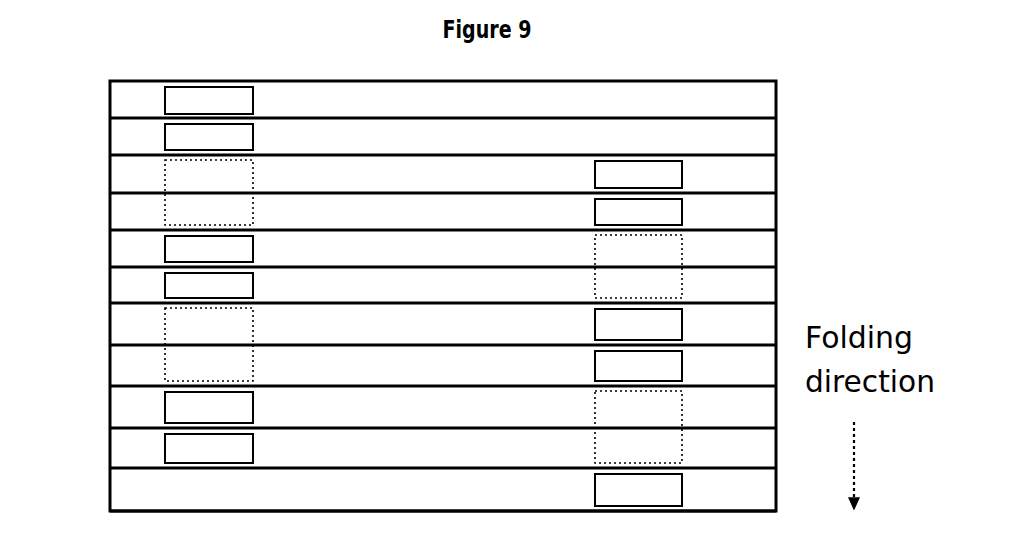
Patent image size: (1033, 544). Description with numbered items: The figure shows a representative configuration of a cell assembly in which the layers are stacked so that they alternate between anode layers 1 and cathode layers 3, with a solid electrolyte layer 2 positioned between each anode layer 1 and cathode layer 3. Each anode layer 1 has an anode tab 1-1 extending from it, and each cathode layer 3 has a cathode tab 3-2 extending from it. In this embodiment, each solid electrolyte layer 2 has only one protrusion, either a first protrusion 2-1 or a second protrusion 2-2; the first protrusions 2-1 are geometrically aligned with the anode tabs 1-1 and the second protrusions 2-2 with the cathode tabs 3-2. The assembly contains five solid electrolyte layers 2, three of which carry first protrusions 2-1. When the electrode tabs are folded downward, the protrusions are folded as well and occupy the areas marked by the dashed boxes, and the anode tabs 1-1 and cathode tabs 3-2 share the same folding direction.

The anode layer 1 is at (101, 105).
The solid electrolyte layer 2 is at (101, 138).
The cathode layer 3 is at (101, 170).
The anode tab 1-1 is at (209, 254).
The first protrusion 2-1 is at (209, 293).
The cathode tab 3-2 is at (638, 333).
The second protrusion 2-2 is at (638, 289).